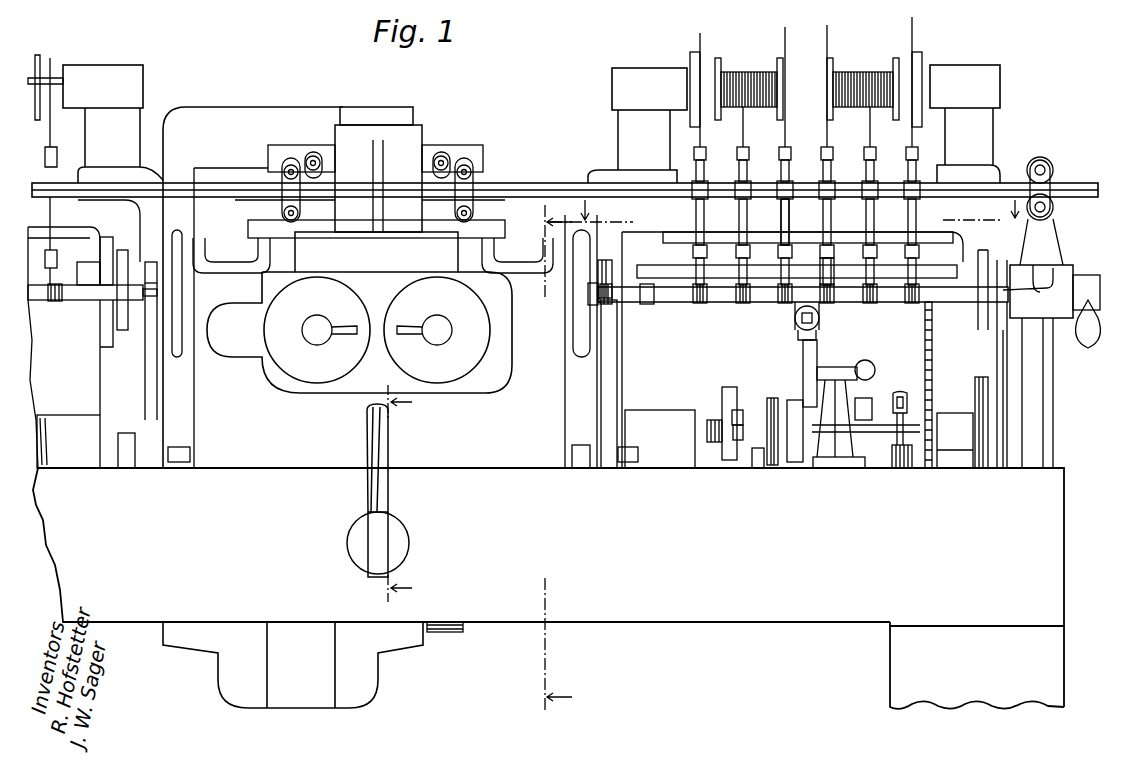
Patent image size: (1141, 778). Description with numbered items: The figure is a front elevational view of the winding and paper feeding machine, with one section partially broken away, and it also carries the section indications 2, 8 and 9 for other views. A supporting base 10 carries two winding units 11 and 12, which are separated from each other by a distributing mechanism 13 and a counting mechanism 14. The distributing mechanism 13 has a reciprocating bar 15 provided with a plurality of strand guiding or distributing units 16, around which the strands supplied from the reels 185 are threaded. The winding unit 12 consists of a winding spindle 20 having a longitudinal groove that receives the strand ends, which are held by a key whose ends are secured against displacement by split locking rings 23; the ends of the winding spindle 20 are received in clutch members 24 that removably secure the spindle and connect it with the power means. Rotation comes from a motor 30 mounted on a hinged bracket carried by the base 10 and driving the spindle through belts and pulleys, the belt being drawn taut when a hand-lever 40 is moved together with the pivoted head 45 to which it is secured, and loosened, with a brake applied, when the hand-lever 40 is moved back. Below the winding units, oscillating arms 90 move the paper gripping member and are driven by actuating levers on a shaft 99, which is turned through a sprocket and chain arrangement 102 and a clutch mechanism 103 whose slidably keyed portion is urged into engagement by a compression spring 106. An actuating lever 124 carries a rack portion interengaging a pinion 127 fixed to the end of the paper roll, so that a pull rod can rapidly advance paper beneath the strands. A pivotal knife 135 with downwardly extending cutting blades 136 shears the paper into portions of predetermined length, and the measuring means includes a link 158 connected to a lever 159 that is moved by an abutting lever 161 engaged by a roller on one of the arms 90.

The supporting base 10 is at (515, 612).
The winding unit 11 is at (153, 144).
The winding unit 12 is at (645, 58).
The distributing mechanism 13 is at (326, 122).
The counting mechanism 14 is at (368, 381).
The reciprocating bar 15 is at (505, 183).
The strand guiding or distributing units 16 is at (740, 230).
The winding spindle 20 is at (68, 298).
The split locking rings 23 is at (648, 305).
The clutch members 24 is at (1058, 264).
The motor 30 is at (368, 678).
The hand-lever 40 is at (378, 455).
The pivoted head 45 is at (363, 538).
The oscillating arms 90 is at (1003, 397).
The shaft 99 is at (867, 443).
The sprocket and chain arrangement 102 is at (772, 400).
The clutch mechanism 103 is at (760, 465).
The compression spring 106 is at (722, 425).
The actuating lever 124 is at (603, 393).
The pinion 127 is at (600, 258).
The pivotal knife 135 is at (803, 233).
The cutting blades 136 is at (842, 250).
The link 158 is at (900, 390).
The lever 159 is at (880, 432).
The abutting lever 161 is at (975, 390).
The reels 185 is at (760, 73).
The section line 2- 2 is at (784, 209).
The section line 8- 8 is at (558, 463).
The section line 9- 9 is at (405, 493).